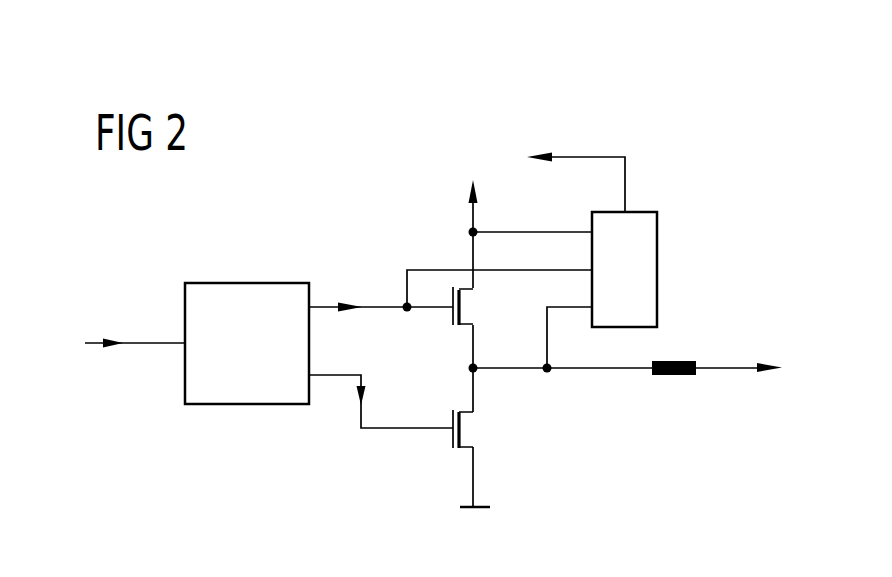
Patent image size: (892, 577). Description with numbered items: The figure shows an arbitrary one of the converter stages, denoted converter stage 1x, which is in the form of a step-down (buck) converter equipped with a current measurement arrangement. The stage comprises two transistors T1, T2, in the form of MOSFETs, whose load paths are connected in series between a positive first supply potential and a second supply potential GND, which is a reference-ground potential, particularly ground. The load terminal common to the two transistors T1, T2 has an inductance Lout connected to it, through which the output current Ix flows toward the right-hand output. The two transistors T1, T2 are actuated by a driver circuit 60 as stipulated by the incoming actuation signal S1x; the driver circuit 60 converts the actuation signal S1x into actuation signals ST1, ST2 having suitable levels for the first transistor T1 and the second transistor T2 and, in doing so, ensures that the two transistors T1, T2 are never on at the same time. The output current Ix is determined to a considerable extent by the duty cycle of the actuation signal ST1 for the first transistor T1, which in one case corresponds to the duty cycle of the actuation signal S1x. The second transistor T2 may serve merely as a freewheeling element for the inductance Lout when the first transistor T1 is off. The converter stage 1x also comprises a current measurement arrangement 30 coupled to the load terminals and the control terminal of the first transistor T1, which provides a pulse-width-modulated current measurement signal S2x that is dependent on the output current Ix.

The driver circuit 60 is at (244, 283).
The current measurement arrangement 30 is at (657, 268).
The converter stage 1x is at (405, 232).
The first transistor T1 is at (463, 302).
The second transistor T2 is at (465, 427).
The inductance Lout is at (673, 385).
The actuation signal S1x is at (135, 326).
The current measurement signal S2x is at (576, 166).
The actuation signal for the first transistor ST1 is at (450, 289).
The actuation signal for the second transistor ST2 is at (381, 401).
The second supply potential GND is at (475, 528).
The output current Ix is at (627, 351).